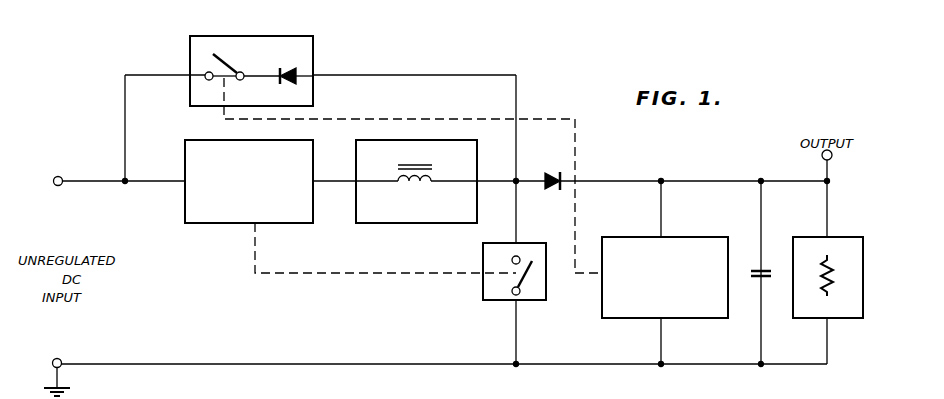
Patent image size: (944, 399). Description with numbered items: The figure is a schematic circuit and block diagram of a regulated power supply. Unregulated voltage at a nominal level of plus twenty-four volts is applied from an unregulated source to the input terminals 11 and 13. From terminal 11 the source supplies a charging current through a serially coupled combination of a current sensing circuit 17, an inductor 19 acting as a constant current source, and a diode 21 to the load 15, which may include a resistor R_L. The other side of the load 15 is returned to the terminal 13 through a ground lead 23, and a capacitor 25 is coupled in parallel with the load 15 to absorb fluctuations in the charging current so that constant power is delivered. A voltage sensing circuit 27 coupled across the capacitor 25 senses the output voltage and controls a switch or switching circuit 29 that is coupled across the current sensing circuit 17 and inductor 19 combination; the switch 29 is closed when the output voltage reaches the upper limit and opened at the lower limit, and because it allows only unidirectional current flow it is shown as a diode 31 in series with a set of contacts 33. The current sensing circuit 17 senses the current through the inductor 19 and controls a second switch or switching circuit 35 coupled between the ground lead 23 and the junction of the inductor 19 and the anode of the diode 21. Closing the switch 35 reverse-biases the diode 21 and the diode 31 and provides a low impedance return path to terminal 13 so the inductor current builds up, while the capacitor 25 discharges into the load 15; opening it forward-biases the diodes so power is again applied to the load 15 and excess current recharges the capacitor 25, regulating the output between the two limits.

The input terminal 11 is at (62, 176).
The input terminal 13 is at (60, 358).
The load 15 is at (850, 318).
The current sensing circuit 17 is at (225, 215).
The inductor 19 is at (397, 205).
The diode 21 is at (551, 170).
The ground lead 23 is at (216, 347).
The capacitor 25 is at (756, 280).
The voltage sensing circuit 27 is at (602, 299).
The switch or switching circuit 29 is at (313, 48).
The diode 31 is at (302, 50).
The set of contacts 33 is at (232, 62).
The second switch or switching circuit 35 is at (483, 293).